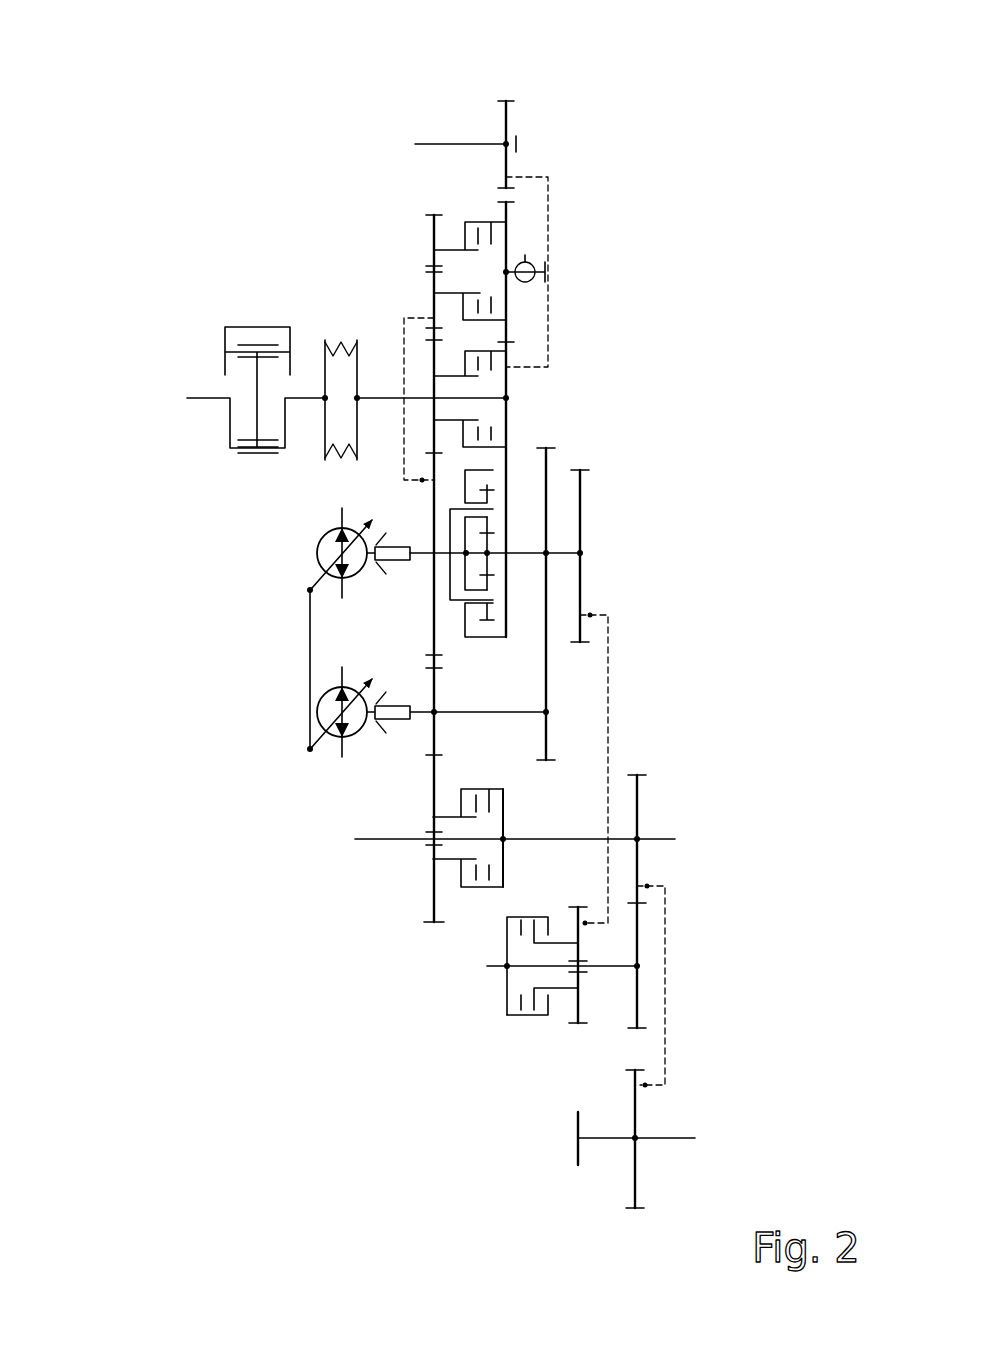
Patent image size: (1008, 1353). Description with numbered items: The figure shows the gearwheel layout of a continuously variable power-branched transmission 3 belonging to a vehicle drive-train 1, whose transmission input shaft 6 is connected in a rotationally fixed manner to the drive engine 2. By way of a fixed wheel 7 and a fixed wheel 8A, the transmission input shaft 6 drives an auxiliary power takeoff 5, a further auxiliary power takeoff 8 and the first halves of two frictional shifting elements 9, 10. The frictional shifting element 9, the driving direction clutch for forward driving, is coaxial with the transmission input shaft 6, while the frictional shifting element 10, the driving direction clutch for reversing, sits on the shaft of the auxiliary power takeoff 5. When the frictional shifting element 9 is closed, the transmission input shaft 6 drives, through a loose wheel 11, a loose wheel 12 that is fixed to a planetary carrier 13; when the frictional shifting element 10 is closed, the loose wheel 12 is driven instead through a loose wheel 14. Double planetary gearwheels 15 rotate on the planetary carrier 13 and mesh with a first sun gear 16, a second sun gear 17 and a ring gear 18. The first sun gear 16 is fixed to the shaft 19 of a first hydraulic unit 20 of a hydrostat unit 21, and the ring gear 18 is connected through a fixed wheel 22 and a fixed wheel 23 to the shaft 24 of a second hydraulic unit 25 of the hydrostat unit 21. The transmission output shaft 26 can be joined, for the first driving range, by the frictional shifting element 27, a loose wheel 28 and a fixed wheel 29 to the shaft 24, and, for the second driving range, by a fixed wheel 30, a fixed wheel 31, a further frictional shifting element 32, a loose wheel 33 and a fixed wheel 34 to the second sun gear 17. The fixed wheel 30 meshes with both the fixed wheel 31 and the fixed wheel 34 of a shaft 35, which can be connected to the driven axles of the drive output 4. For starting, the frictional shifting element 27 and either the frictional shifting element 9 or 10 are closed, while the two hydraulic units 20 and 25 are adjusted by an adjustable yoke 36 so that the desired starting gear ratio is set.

The vehicle drive-train 1 is at (566, 122).
The drive engine 2 is at (228, 326).
The continuously variable power-branched transmission 3 is at (634, 527).
The drive output 4 is at (530, 1128).
The auxiliary power takeoff 5 is at (422, 268).
The transmission input shaft 6 is at (383, 398).
The fixed wheel 7 is at (506, 384).
The further auxiliary power takeoff 8 is at (463, 125).
The fixed wheel 8A is at (506, 247).
The frictional shifting element 9 is at (477, 352).
The frictional shifting element 10 is at (468, 216).
The loose wheel 11 is at (435, 357).
The loose wheel 12 is at (432, 637).
The planetary carrier 13 is at (490, 602).
The loose wheel 14 is at (427, 222).
The double planetary gearwheels 15 is at (478, 592).
The first sun gear 16 is at (448, 545).
The second sun gear 17 is at (487, 548).
The ring gear 18 is at (492, 476).
The shaft 19 is at (427, 556).
The first hydraulic unit 20 is at (318, 545).
The hydrostat unit 21 is at (270, 625).
The fixed wheel 22 is at (547, 468).
The fixed wheel 23 is at (548, 690).
The shaft 24 is at (548, 735).
The second hydraulic unit 25 is at (312, 749).
The transmission output shaft 26 is at (661, 840).
The frictional shifting element 27 is at (477, 888).
The loose wheel 28 is at (430, 885).
The fixed wheel 29 is at (430, 735).
The fixed wheel 30 is at (640, 808).
The fixed wheel 31 is at (637, 927).
The frictional shifting element 32 is at (507, 1015).
The loose wheel 33 is at (582, 1010).
The fixed wheel 34 is at (640, 1180).
The shaft 35 is at (656, 1136).
The adjustable yoke 36 is at (322, 692).